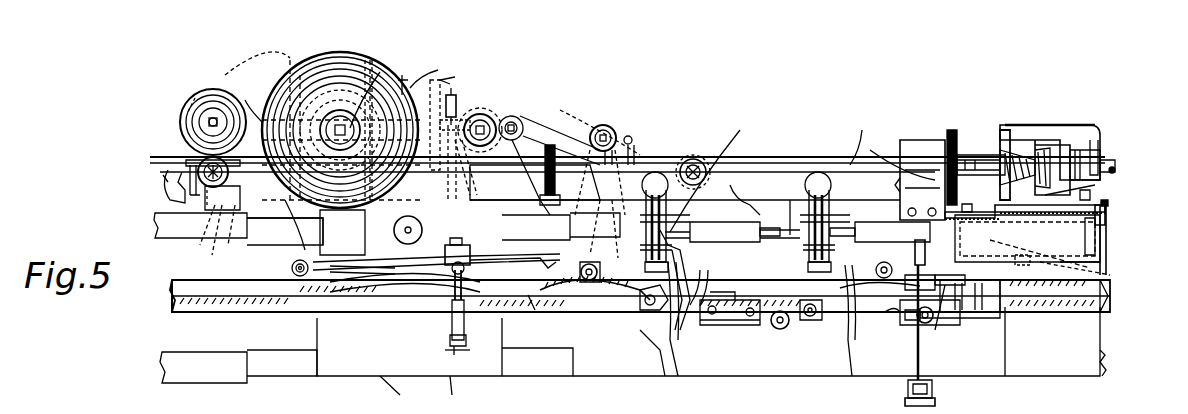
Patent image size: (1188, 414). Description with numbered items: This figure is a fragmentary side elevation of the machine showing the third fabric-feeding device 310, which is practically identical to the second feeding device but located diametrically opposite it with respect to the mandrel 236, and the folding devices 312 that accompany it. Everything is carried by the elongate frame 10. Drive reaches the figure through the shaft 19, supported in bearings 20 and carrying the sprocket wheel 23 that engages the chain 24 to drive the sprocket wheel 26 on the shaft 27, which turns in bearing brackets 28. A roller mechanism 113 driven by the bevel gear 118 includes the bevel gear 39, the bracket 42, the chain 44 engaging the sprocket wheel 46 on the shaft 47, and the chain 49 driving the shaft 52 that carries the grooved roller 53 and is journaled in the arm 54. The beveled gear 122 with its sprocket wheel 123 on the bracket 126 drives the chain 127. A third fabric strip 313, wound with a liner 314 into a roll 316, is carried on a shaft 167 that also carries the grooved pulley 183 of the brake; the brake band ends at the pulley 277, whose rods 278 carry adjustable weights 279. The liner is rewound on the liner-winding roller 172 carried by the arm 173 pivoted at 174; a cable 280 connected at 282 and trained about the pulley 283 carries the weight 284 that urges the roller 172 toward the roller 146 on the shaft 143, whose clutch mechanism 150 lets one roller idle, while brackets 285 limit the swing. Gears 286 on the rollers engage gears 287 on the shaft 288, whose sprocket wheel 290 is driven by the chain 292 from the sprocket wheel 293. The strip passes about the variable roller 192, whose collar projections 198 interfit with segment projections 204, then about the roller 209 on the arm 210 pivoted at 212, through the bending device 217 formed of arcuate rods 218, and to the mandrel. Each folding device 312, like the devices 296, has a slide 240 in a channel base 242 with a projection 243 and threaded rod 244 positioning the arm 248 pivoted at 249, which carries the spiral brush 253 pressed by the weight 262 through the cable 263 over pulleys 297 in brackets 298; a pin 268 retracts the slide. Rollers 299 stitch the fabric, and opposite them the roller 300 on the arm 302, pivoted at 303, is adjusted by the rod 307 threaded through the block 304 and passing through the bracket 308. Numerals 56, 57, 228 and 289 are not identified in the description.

The elongate frame 10 is at (300, 375).
The shaft 19 is at (1118, 164).
The bearings 20 is at (1090, 152).
The sprocket wheel 23 is at (900, 170).
The chain 24 is at (962, 158).
The sprocket wheel 26 is at (950, 128).
The shaft 27 is at (147, 162).
The bearing brackets 28 is at (916, 142).
The bevel gear 39 is at (1005, 160).
The bracket 42 is at (1095, 238).
The chain 44 is at (1116, 170).
The sprocket wheel 46 is at (1106, 208).
The shaft 47 is at (1092, 194).
The chain 49 is at (1100, 262).
The shaft 52 is at (970, 325).
The grooved roller 53 is at (972, 305).
The arm 54 is at (1045, 290).
The rack bar 56 is at (1000, 208).
The rack bar 57 is at (968, 206).
The roller mechanism 113 is at (1110, 250).
The bevel gear 118 is at (1045, 152).
The beveled gear 122 is at (1003, 135).
The sprocket wheel 123 is at (1020, 150).
The bracket 126 is at (1075, 130).
The chain 127 is at (1095, 135).
The shaft 143 is at (192, 160).
The roller 146 is at (192, 232).
The clutch mechanisms 150 is at (162, 174).
The shafts 167 is at (350, 126).
The liner-winding roller 172 is at (215, 116).
The arm 173 is at (560, 96).
The pivotal mounting 174 is at (280, 68).
The grooved pulley 183 is at (342, 232).
The variable roller 192 is at (436, 256).
The projections 198 is at (452, 395).
The internally inclined projections 204 is at (394, 395).
The roller 209 is at (293, 262).
The arm 210 is at (318, 306).
The pivotal mounting 212 is at (405, 304).
The fabric bending device 217 is at (448, 340).
The arcuate parallel rods 218 is at (448, 318).
The link 228 is at (525, 256).
The mandrel 236 is at (172, 304).
The slide 240 is at (830, 225).
The channel base 242 is at (790, 210).
The projection 243 is at (670, 266).
The threaded rod 244 is at (700, 310).
The arm 248 is at (640, 340).
The pivot 249 is at (645, 350).
The stiff spiral brush 253 is at (600, 292).
The weight 262 is at (662, 178).
The cable 263 is at (740, 160).
The pin 268 is at (660, 300).
The pulley 277 is at (408, 90).
The rods 278 is at (450, 100).
The weights 279 is at (455, 118).
The cable 280 is at (200, 160).
The connection 282 is at (190, 108).
The pulley 283 is at (188, 162).
The weight 284 is at (158, 190).
The brackets 285 is at (285, 231).
The gears 286 is at (603, 101).
The gears 287 is at (408, 238).
The shaft 288 is at (285, 229).
The link 289 is at (228, 232).
The sprocket wheel 290 is at (540, 190).
The chain 292 is at (556, 192).
The sprocket wheel 293 is at (600, 125).
The folding devices 296 is at (98, 409).
The pulleys 297 is at (662, 192).
The bracket 298 is at (900, 167).
The rollers 299 is at (578, 266).
The roller 300 is at (880, 268).
The arm 302 is at (945, 262).
The pivotal connection 303 is at (1108, 275).
The block 304 is at (940, 318).
The rod 307 is at (906, 382).
The bracket 308 is at (905, 402).
The third fabric-feeding device 310 is at (446, 76).
The folding devices 312 is at (675, 360).
The third fabric strip 313 is at (538, 318).
The liner 314 is at (246, 108).
The roll 316 is at (358, 62).